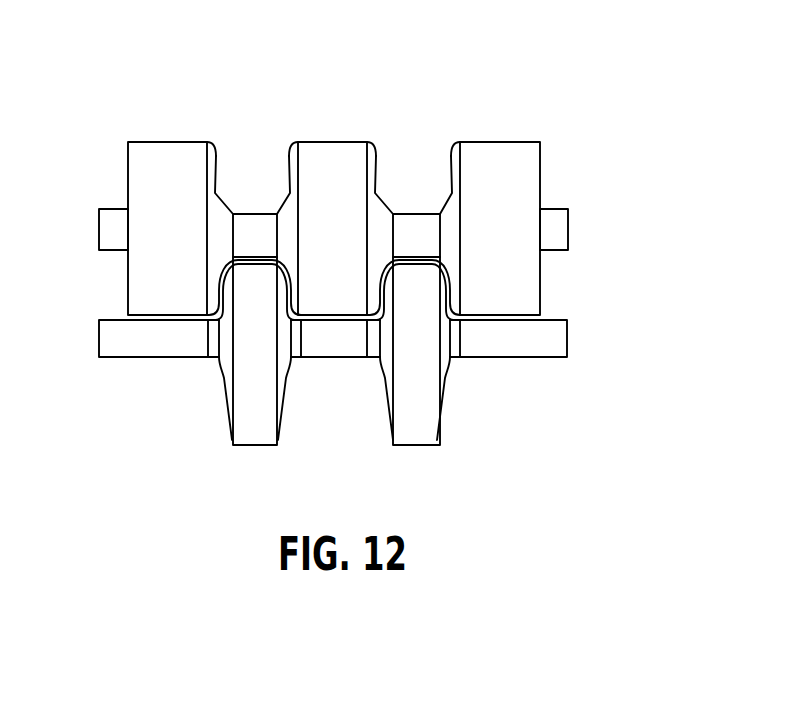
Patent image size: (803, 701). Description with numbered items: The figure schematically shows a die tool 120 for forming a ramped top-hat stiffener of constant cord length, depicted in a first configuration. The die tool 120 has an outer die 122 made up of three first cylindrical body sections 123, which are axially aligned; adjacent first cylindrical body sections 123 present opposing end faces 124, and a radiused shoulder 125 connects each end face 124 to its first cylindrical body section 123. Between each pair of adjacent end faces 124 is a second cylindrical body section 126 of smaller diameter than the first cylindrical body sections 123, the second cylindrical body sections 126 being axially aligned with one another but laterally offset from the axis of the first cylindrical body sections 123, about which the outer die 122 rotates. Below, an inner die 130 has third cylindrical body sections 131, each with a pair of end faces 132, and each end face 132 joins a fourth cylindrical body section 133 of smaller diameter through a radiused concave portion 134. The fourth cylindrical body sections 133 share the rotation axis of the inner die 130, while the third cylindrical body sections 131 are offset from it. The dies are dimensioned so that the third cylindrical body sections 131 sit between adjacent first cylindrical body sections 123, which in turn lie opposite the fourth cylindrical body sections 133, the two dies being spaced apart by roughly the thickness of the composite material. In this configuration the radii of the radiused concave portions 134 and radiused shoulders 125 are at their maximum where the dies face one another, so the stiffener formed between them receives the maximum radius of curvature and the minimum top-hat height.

The die tool 120 is at (444, 92).
The outer die 122 is at (564, 182).
The first cylindrical body section 123 is at (127, 270).
The end face 124 is at (290, 178).
The radiused shoulder 125 is at (290, 147).
The second cylindrical body section 126 is at (256, 228).
The inner die 130 is at (150, 399).
The third cylindrical body section 131 is at (256, 435).
The end face 132 is at (224, 411).
The fourth cylindrical body section 133 is at (98, 338).
The radiused concave portion 134 is at (218, 364).